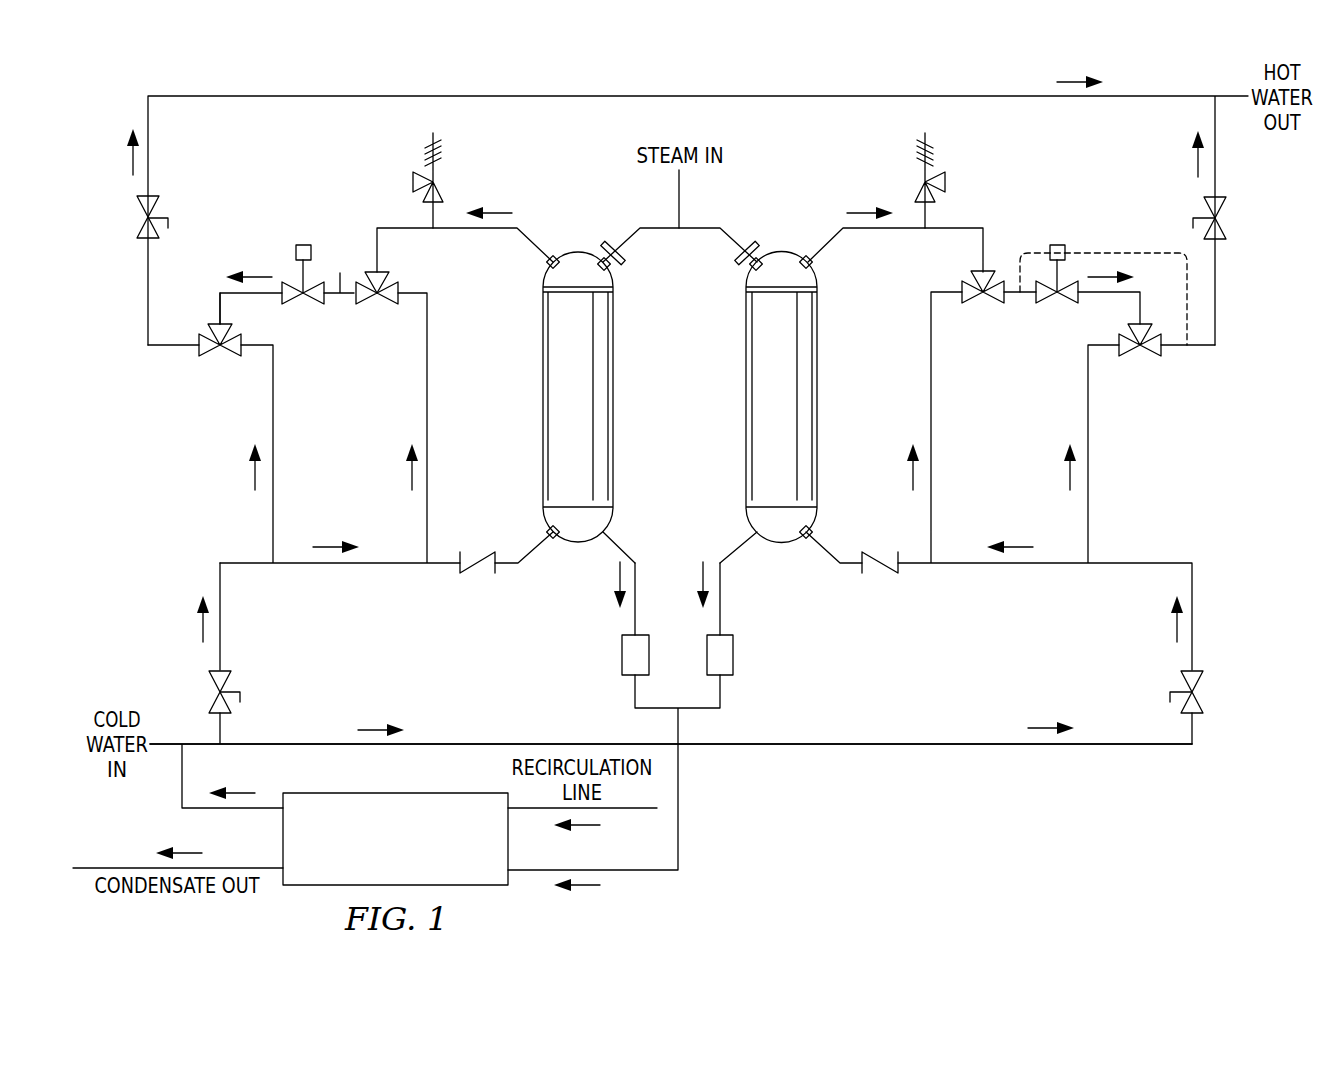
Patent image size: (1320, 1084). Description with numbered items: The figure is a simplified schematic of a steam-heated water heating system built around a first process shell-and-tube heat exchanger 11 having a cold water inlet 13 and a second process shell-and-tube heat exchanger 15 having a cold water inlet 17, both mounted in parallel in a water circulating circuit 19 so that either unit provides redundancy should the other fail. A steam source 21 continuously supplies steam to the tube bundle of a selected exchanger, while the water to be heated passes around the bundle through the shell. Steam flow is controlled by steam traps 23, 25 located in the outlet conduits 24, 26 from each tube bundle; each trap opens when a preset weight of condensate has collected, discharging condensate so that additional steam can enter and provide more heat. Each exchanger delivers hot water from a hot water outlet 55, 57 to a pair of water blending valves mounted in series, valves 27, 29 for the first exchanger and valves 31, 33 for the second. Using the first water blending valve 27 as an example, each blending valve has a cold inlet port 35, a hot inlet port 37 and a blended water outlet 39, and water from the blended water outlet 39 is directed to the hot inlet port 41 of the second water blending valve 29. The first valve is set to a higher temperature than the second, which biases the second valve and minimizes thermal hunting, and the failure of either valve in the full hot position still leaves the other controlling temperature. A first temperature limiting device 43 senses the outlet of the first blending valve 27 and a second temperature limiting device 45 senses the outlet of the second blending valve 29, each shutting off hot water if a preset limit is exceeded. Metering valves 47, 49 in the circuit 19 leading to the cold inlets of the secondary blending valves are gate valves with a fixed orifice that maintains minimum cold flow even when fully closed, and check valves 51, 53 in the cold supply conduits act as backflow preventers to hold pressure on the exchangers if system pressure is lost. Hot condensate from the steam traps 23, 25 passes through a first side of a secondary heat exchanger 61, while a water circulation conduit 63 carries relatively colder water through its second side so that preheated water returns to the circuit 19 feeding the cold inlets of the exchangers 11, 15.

The first process shell-and-tube heat exchanger 11 is at (612, 405).
The cold water inlet 13 is at (549, 538).
The second process shell-and-tube heat exchanger 15 is at (745, 405).
The cold water inlet 17 is at (809, 538).
The water circulating circuit 19 is at (903, 746).
The steam source 21 is at (680, 197).
The steam trap 23 is at (623, 655).
The outlet conduit 24 is at (623, 543).
The steam trap 25 is at (733, 655).
The outlet conduit 26 is at (735, 545).
The first water blending valve 27 is at (392, 297).
The second water blending valve 29 is at (222, 358).
The first water blending valve 31 is at (985, 272).
The second water blending valve 33 is at (1142, 357).
The cold inlet port 35 is at (397, 287).
The hot inlet port 37 is at (372, 272).
The blended water outlet 39 is at (367, 305).
The hot inlet port 41 is at (220, 330).
The first temperature limiting device 43 is at (308, 305).
The second temperature limiting device 45 is at (148, 212).
The metering valve 47 is at (220, 687).
The metering valve 49 is at (1200, 683).
The check valve 51 is at (480, 563).
The check valve 53 is at (880, 563).
The hot water outlet 55 is at (550, 258).
The hot water outlet 57 is at (806, 258).
The secondary heat exchanger 61 is at (308, 887).
The water circulation conduit 63 is at (628, 810).